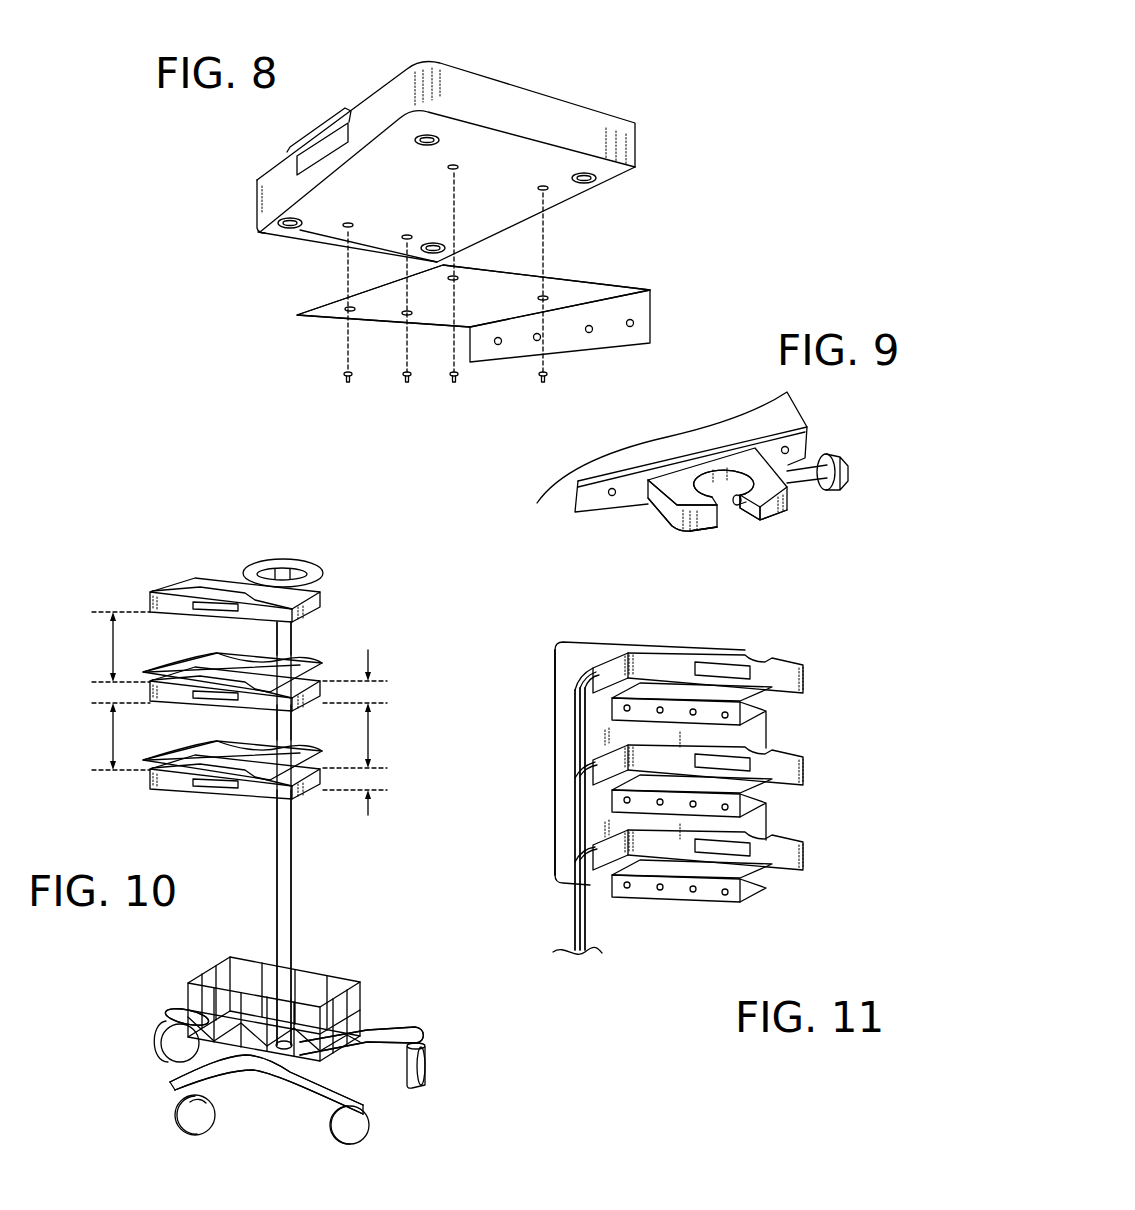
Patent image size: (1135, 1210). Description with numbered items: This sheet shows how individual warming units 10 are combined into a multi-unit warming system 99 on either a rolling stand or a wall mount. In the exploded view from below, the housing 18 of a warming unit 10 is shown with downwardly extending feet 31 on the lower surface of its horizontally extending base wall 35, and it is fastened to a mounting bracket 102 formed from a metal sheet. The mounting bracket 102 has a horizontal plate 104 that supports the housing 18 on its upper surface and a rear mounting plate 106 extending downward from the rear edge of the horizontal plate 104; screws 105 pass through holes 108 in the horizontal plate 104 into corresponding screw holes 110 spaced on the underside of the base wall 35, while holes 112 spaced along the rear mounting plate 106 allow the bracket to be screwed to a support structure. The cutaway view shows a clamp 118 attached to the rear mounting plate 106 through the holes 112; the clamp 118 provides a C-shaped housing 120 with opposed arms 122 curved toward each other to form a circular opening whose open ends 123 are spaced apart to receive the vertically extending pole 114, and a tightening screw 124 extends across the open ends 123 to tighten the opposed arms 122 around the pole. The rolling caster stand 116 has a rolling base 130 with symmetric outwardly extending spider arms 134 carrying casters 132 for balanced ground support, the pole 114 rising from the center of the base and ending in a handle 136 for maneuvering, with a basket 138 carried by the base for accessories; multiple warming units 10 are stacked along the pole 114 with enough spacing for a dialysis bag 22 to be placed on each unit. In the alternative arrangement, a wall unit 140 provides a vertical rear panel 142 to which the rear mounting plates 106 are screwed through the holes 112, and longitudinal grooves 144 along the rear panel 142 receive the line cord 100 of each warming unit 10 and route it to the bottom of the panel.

In FIG. 8, the warming unit 10 is at (637, 90).
In FIG. 10, the warming unit 10 is at (168, 588).
In FIG. 11, the warming unit 10 is at (790, 672).
In FIG. 8, the housing 18 is at (368, 76).
In FIG. 10, the dialysis bag 22 is at (307, 660).
In FIG. 8, the feet 31 is at (443, 147).
In FIG. 8, the base wall 35 is at (411, 209).
In FIG. 10, the multi-unit warming system 99 is at (86, 552).
In FIG. 11, the multi-unit warming system 99 is at (866, 661).
In FIG. 11, the line cord 100 is at (583, 920).
In FIG. 8, the mounting bracket 102 is at (670, 285).
In FIG. 8, the horizontal plate 104 is at (383, 315).
In FIG. 9, the horizontal plate 104 is at (672, 447).
In FIG. 11, the horizontal plate 104 is at (742, 705).
In FIG. 8, the screws 105 is at (343, 377).
In FIG. 8, the rear mounting plate 106 is at (642, 337).
In FIG. 9, the rear mounting plate 106 is at (585, 512).
In FIG. 11, the rear mounting plate 106 is at (740, 715).
In FIG. 8, the holes 108 is at (460, 276).
In FIG. 8, the screw holes 110 is at (465, 172).
In FIG. 8, the holes 112 is at (535, 340).
In FIG. 9, the holes 112 is at (789, 447).
In FIG. 11, the holes 112 is at (724, 895).
In FIG. 10, the vertically extending pole 114 is at (290, 847).
In FIG. 10, the rolling caster stand 116 is at (349, 640).
In FIG. 9, the clamp 118 is at (654, 542).
In FIG. 9, the C-shaped housing 120 is at (708, 467).
In FIG. 9, the opposed arms 122 is at (763, 480).
In FIG. 9, the open ends 123 is at (770, 503).
In FIG. 9, the tightening screw 124 is at (828, 487).
In FIG. 10, the rolling base 130 is at (398, 1040).
In FIG. 10, the casters 132 is at (173, 1042).
In FIG. 10, the spider arms 134 is at (367, 1038).
In FIG. 10, the handle 136 is at (310, 570).
In FIG. 10, the basket 138 is at (327, 972).
In FIG. 11, the wall unit 140 is at (860, 721).
In FIG. 11, the rear panel 142 is at (570, 662).
In FIG. 11, the longitudinal grooves 144 is at (580, 682).